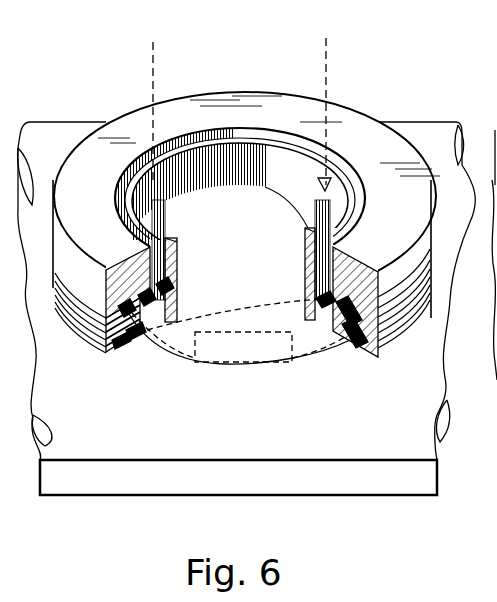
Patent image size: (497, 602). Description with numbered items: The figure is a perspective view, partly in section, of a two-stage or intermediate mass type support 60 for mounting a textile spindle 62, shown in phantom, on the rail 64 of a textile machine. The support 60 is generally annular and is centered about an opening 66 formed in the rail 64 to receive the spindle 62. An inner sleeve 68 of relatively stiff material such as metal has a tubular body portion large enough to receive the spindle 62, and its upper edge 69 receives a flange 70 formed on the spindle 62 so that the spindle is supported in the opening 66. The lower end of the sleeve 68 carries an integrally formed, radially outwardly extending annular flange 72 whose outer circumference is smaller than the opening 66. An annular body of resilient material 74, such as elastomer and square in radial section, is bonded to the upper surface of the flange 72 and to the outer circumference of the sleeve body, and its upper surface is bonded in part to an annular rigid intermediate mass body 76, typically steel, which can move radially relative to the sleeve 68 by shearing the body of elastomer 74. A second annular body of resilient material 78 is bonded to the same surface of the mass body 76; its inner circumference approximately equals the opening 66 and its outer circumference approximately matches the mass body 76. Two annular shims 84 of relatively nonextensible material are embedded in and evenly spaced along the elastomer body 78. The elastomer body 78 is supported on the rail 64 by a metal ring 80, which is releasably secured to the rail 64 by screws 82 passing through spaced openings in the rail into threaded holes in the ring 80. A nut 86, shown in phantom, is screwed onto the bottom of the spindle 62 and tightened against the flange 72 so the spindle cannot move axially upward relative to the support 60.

The support 60 is at (361, 77).
The textile spindle 62 is at (153, 42).
The rail 64 is at (245, 490).
The opening 66 is at (240, 351).
The inner sleeve 68 is at (180, 270).
The upper edge 69 is at (150, 228).
The flange 70 is at (333, 178).
The annular flange 72 is at (333, 335).
The body of resilient material 74 is at (162, 305).
The mass body 76 is at (97, 201).
The second body of resilient material 78 is at (132, 340).
The ring 80 is at (384, 338).
The screws 82 is at (118, 347).
The annular shims 84 is at (108, 344).
The nut 86 is at (263, 362).